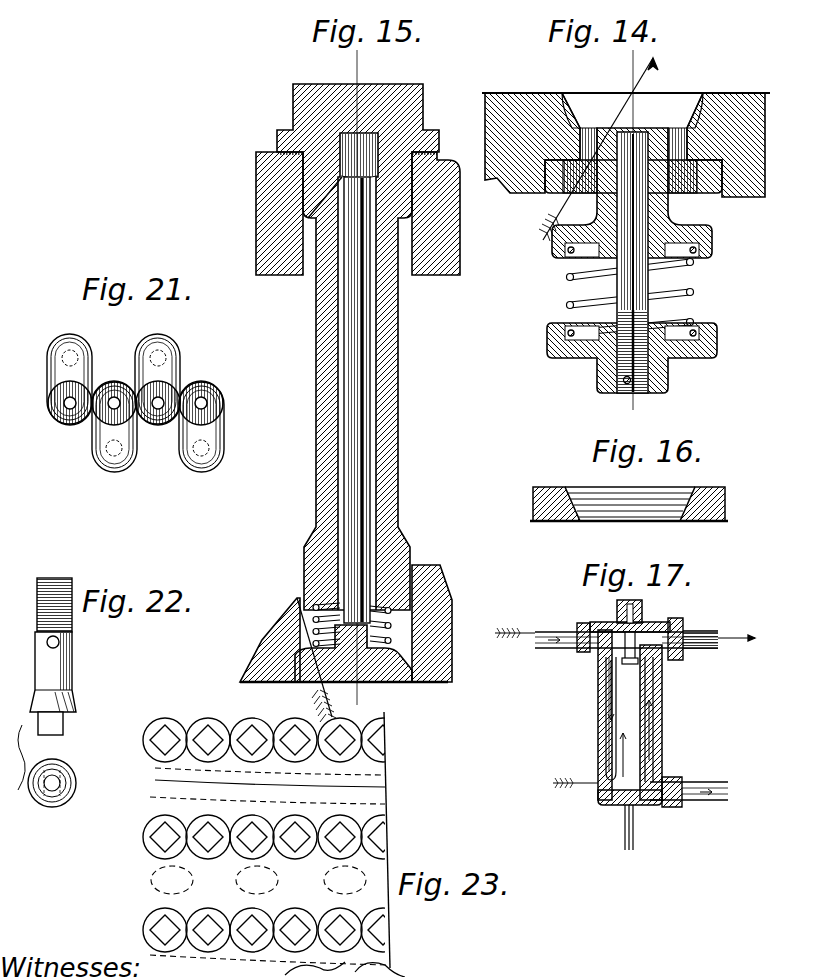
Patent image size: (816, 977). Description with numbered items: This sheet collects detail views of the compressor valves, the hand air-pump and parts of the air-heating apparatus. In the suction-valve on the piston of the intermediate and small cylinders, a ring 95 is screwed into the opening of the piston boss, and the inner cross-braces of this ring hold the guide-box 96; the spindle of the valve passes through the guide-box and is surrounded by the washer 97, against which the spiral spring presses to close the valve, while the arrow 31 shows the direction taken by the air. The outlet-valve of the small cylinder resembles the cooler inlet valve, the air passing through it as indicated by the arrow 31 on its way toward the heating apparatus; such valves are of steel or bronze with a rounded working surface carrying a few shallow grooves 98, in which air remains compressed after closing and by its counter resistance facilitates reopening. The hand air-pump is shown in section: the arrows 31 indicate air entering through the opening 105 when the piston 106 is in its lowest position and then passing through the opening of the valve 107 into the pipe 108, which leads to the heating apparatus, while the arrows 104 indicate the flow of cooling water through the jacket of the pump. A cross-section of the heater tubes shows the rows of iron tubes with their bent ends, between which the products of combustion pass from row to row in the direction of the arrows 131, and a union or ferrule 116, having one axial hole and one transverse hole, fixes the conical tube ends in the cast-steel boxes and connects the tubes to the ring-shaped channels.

In FIG. 15, the arrow 31 is at (300, 620).
In FIG. 14, the arrow 31 is at (655, 64).
In FIG. 17, the arrow 31 is at (736, 640).
In FIG. 14, the ring 95 is at (722, 196).
In FIG. 14, the guide-box 96 is at (712, 252).
In FIG. 14, the washer 97 is at (695, 355).
In FIG. 16, the shallow grooves 98 is at (690, 521).
In FIG. 17, the arrows 104 is at (522, 641).
In FIG. 17, the opening 105 is at (603, 780).
In FIG. 17, the piston 106 is at (624, 808).
In FIG. 17, the valve 107 is at (634, 658).
In FIG. 17, the pipe 108 is at (712, 630).
In FIG. 22, the union or ferrule 116 is at (66, 665).
In FIG. 23, the union or ferrule 116 is at (200, 720).
In FIG. 21, the arrows 131 is at (114, 380).